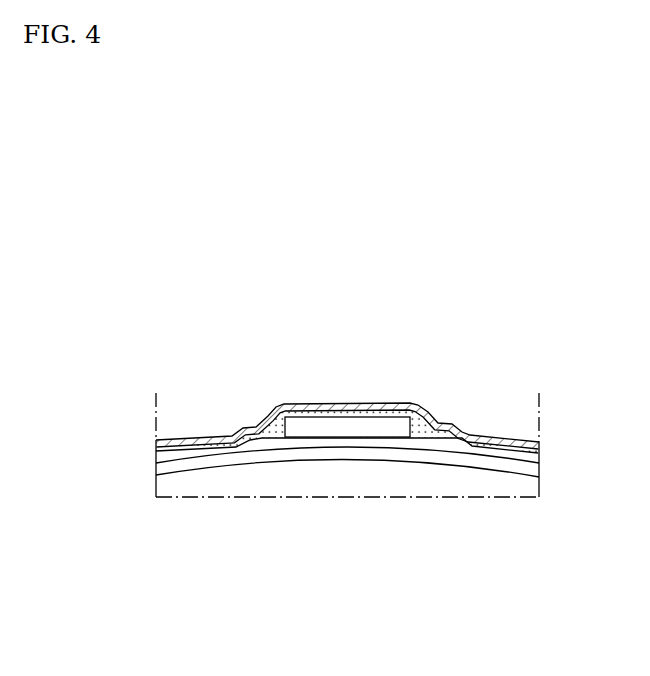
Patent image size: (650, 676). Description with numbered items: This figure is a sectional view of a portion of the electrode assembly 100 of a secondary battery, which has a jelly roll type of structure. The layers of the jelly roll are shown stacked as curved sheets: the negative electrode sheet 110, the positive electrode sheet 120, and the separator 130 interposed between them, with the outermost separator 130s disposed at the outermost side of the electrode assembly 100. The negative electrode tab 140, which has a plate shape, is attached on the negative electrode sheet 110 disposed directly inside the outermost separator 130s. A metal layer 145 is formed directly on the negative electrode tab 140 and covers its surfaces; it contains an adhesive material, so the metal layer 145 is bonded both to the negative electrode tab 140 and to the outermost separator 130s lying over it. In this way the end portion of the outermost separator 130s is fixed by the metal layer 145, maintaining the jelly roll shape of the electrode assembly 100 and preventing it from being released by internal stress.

The electrode assembly 100 is at (430, 524).
The negative electrode sheet 110 is at (512, 455).
The positive electrode sheet 120 is at (243, 488).
The separator 130 is at (216, 462).
The outermost separator 130s is at (329, 404).
The negative electrode tab 140 is at (313, 432).
The metal layer 145 is at (381, 413).